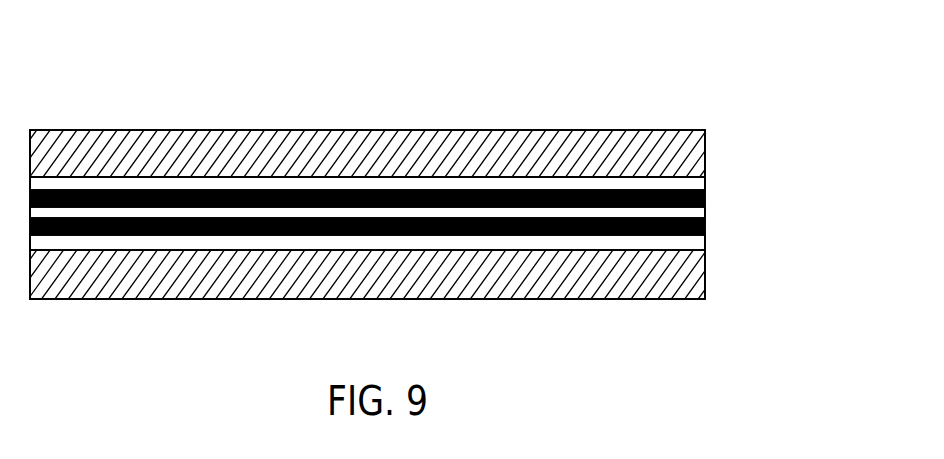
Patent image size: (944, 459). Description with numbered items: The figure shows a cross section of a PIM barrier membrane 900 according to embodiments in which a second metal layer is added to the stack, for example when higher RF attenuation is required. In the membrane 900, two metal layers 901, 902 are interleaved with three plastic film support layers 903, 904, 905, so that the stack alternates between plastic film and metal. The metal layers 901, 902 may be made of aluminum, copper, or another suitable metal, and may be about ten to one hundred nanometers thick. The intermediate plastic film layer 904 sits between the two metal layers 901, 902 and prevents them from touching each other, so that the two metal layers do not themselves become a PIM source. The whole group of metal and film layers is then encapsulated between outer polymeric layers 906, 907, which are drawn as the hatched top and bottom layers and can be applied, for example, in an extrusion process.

The PIM barrier membrane 900 is at (73, 93).
The polymeric layer 906 is at (693, 148).
The plastic film support layer 903 is at (700, 185).
The metal layer 901 is at (700, 197).
The intermediate plastic film layer 904 is at (698, 213).
The metal layer 902 is at (700, 233).
The plastic film support layer 905 is at (697, 240).
The polymeric layer 907 is at (698, 288).